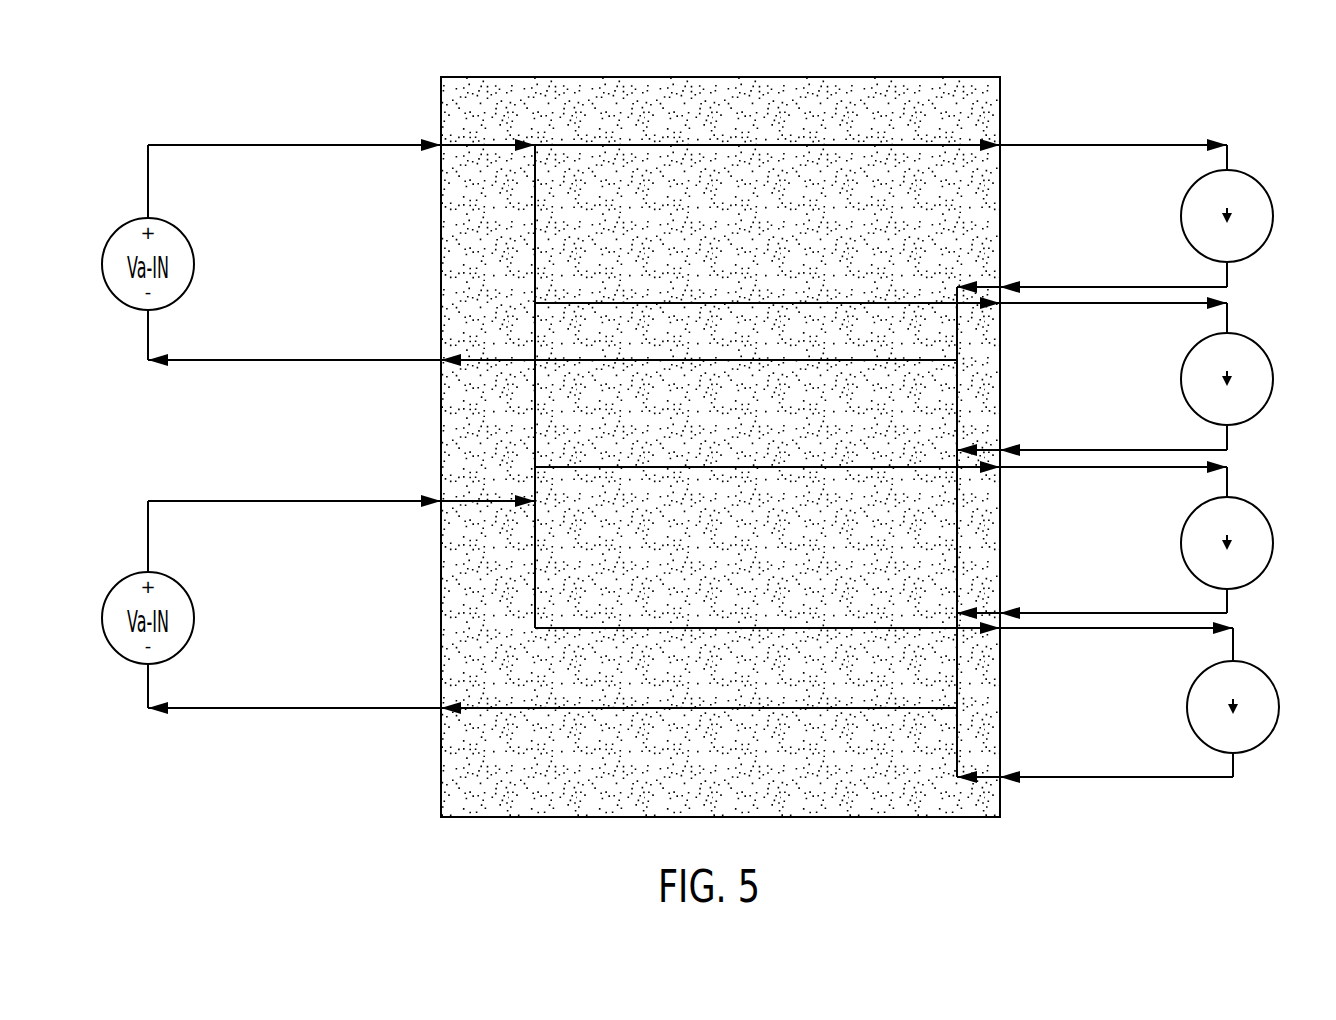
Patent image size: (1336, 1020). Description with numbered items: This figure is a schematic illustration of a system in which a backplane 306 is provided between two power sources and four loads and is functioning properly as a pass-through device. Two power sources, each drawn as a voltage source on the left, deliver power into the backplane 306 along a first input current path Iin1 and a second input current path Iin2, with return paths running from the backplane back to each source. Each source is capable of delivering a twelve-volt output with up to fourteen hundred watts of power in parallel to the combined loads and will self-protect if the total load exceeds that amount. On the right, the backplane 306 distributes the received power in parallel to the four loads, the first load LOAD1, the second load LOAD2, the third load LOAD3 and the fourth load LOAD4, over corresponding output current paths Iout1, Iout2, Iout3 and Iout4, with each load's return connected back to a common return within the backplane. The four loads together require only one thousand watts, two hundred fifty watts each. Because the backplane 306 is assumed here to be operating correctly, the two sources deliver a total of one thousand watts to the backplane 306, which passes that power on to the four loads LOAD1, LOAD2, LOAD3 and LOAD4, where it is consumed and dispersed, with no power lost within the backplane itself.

The backplane 306 is at (507, 90).
The first input current path Iin1 is at (574, 163).
The second input current path Iin2 is at (341, 516).
The first output current path Iout1 is at (1113, 156).
The second output current path Iout2 is at (881, 317).
The third output current path Iout3 is at (881, 480).
The fourth output current path Iout4 is at (884, 643).
The first load LOAD1 is at (1134, 219).
The second load LOAD2 is at (1136, 379).
The third load LOAD3 is at (1133, 543).
The fourth load LOAD4 is at (1137, 705).